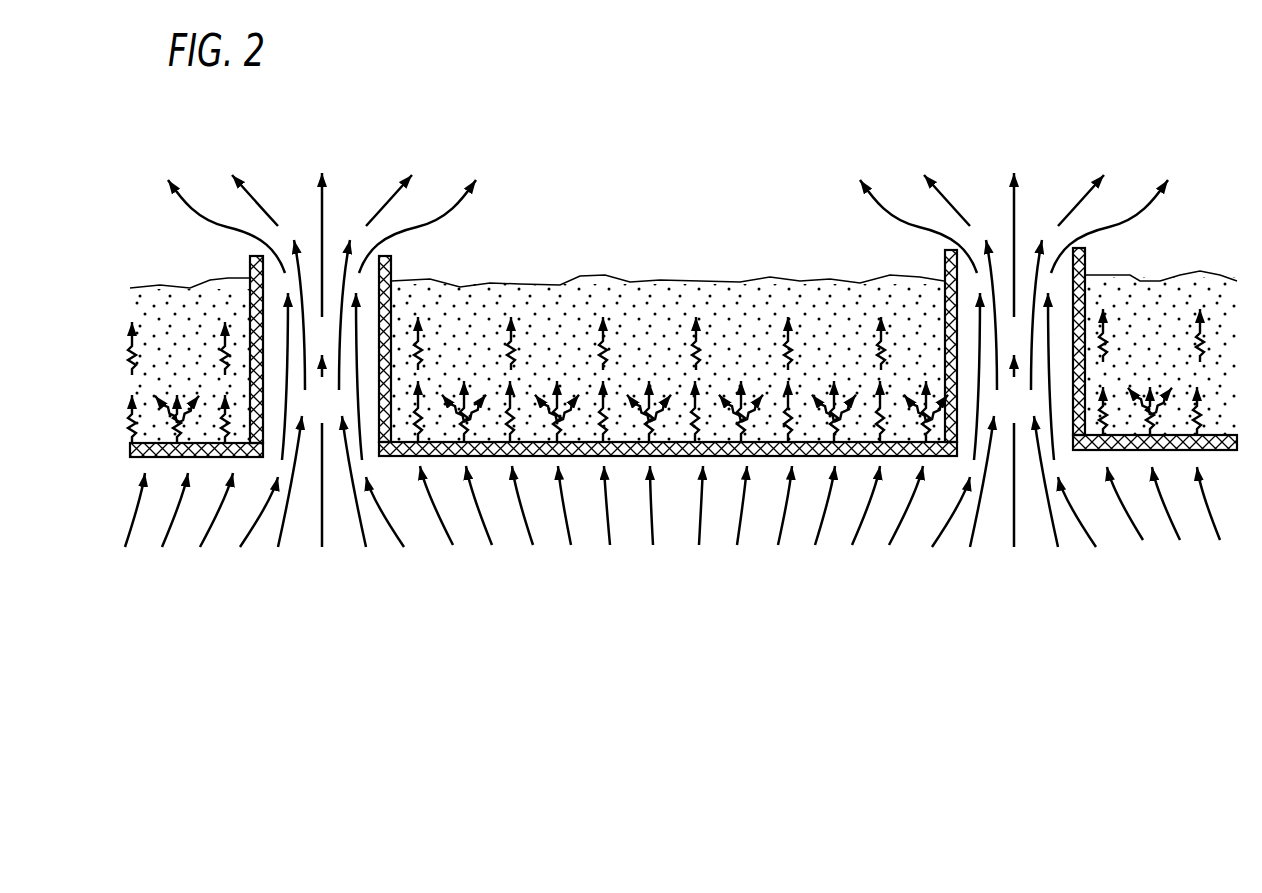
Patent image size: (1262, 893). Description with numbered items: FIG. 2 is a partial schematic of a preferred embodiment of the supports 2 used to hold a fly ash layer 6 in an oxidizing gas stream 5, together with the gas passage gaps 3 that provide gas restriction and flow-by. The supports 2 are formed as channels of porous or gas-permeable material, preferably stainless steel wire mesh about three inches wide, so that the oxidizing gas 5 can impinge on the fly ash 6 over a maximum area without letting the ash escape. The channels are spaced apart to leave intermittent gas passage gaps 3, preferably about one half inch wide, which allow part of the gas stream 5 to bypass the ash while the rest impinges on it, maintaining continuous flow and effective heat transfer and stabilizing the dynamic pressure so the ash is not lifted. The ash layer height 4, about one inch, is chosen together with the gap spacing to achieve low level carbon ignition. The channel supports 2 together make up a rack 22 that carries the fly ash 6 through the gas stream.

The support 2 is at (392, 263).
The gas passage gap 3 is at (332, 414).
The ash layer height 4 is at (607, 276).
The oxidizing gas stream 5 is at (742, 526).
The fly ash layer 6 is at (665, 348).
The rack 22 is at (784, 162).